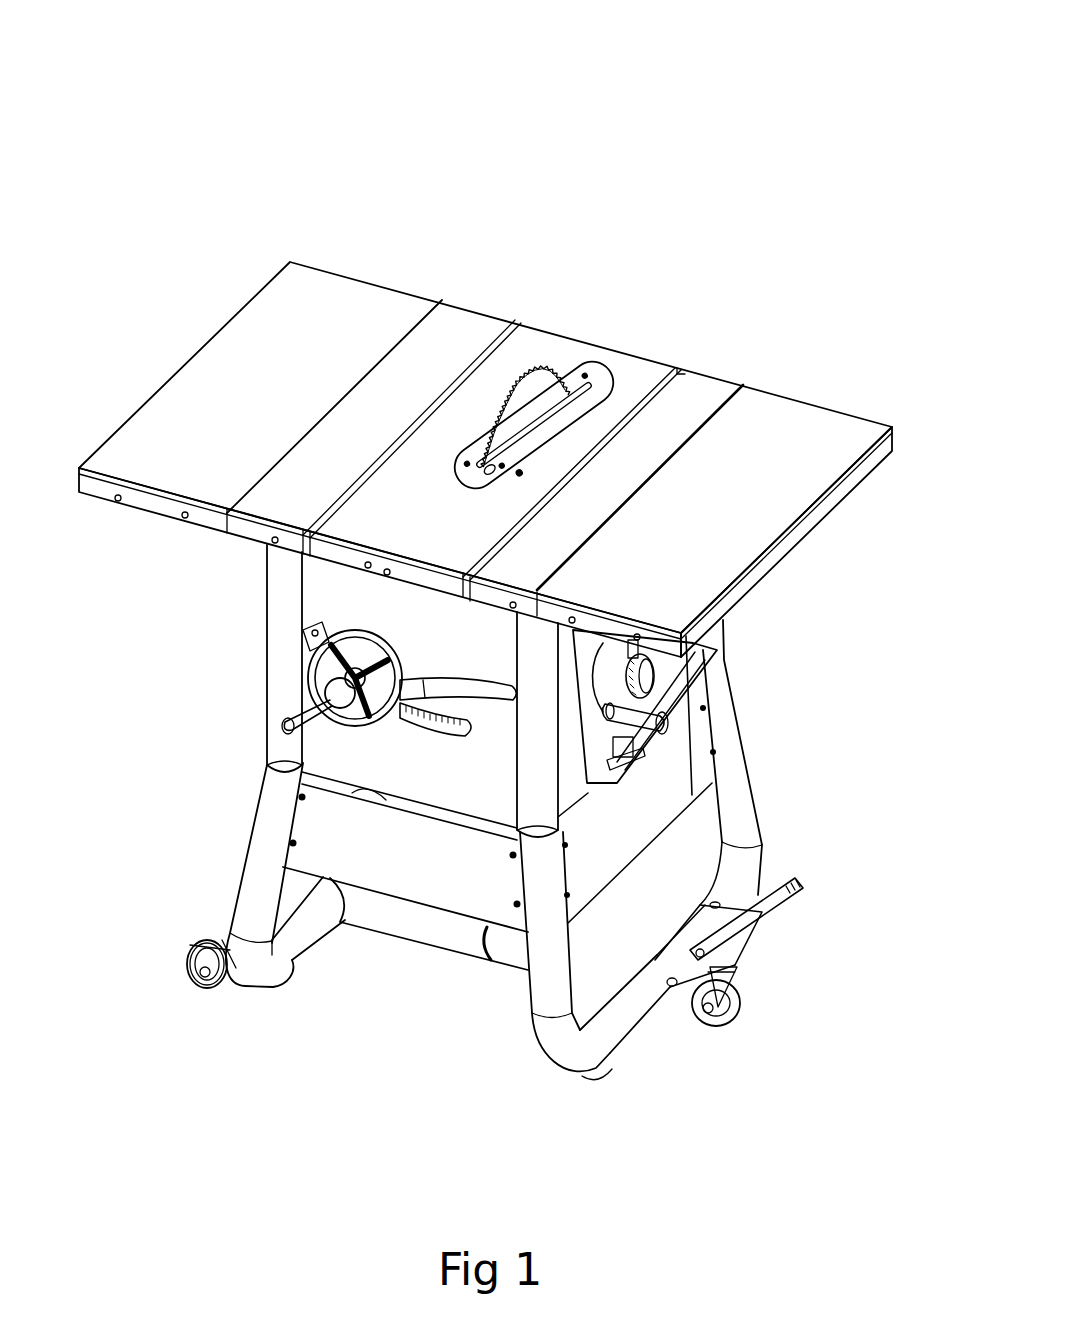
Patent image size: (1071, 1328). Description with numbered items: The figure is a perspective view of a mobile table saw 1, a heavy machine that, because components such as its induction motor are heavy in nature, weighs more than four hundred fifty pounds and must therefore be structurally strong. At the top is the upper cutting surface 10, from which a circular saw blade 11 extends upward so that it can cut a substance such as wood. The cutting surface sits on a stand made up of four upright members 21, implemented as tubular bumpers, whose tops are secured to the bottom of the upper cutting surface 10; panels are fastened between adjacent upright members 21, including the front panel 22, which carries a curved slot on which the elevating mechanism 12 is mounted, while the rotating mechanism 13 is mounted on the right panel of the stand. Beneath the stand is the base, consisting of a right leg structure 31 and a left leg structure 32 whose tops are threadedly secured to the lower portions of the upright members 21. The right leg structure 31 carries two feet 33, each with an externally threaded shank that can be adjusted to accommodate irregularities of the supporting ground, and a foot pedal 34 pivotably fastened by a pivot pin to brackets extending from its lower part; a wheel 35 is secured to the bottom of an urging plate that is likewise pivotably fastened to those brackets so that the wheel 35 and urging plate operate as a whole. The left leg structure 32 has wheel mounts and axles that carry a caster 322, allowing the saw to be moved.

The mobile table saw 1 is at (463, 180).
The upper cutting surface 10 is at (742, 450).
The circular saw blade 11 is at (540, 397).
The elevating mechanism 12 is at (313, 654).
The rotating mechanism 13 is at (688, 720).
The upright members 21 is at (285, 596).
The front panel 22 is at (360, 751).
The right leg structure 31 is at (740, 814).
The left leg structure 32 is at (267, 851).
The caster 322 is at (215, 978).
The feet 33 is at (610, 1070).
The foot pedal 34 is at (740, 943).
The wheel 35 is at (740, 1005).